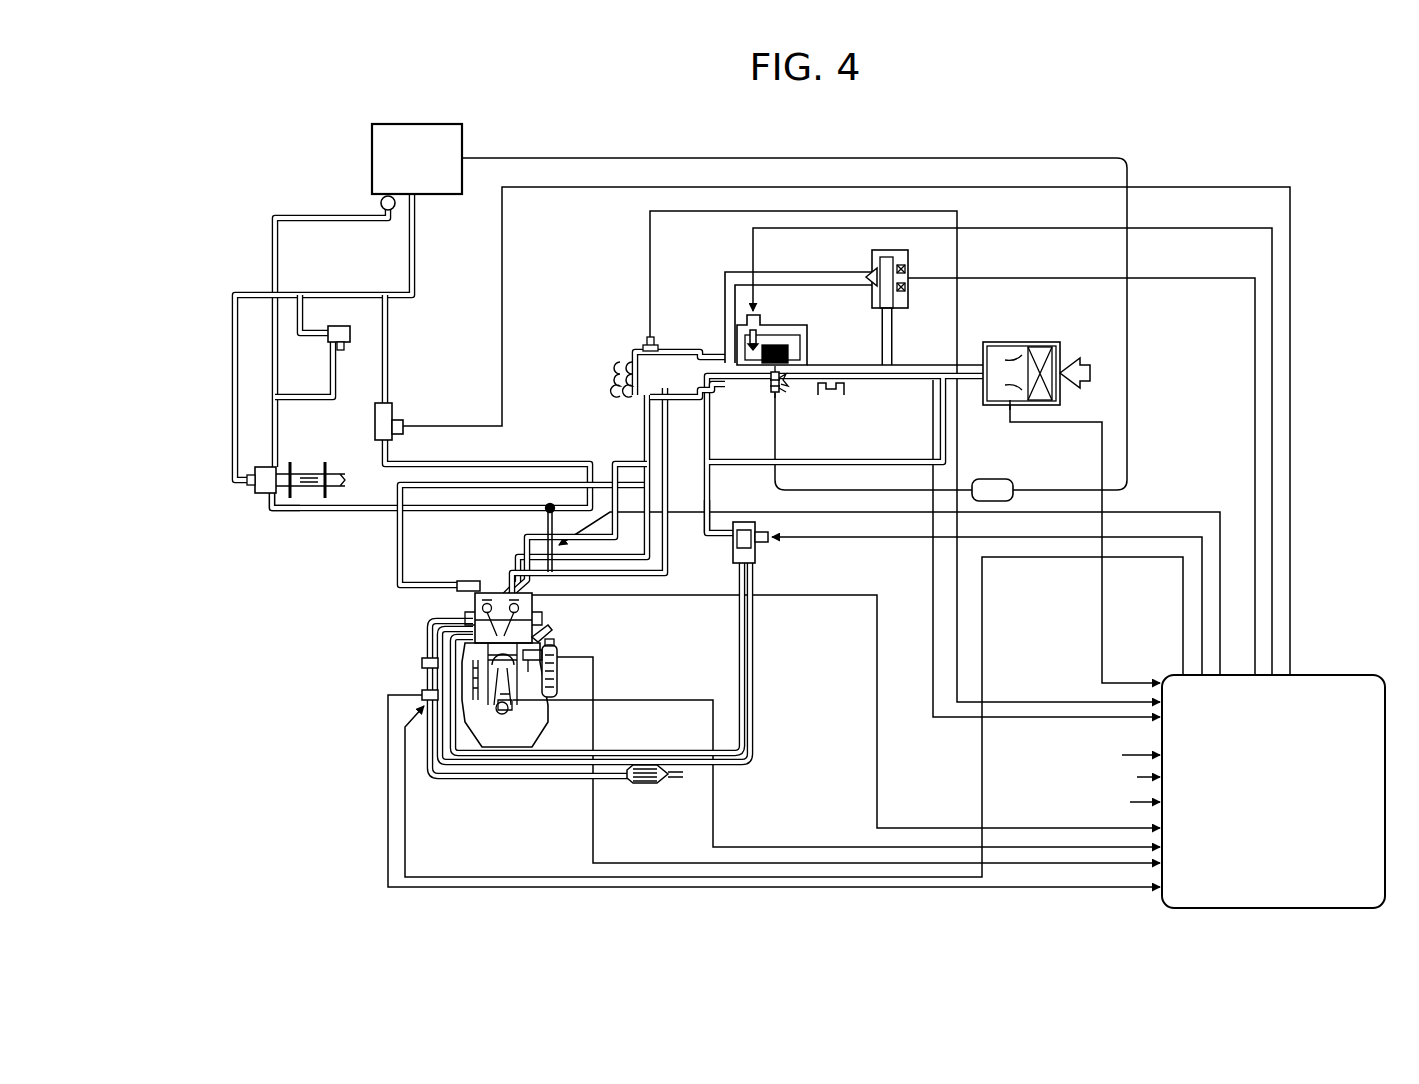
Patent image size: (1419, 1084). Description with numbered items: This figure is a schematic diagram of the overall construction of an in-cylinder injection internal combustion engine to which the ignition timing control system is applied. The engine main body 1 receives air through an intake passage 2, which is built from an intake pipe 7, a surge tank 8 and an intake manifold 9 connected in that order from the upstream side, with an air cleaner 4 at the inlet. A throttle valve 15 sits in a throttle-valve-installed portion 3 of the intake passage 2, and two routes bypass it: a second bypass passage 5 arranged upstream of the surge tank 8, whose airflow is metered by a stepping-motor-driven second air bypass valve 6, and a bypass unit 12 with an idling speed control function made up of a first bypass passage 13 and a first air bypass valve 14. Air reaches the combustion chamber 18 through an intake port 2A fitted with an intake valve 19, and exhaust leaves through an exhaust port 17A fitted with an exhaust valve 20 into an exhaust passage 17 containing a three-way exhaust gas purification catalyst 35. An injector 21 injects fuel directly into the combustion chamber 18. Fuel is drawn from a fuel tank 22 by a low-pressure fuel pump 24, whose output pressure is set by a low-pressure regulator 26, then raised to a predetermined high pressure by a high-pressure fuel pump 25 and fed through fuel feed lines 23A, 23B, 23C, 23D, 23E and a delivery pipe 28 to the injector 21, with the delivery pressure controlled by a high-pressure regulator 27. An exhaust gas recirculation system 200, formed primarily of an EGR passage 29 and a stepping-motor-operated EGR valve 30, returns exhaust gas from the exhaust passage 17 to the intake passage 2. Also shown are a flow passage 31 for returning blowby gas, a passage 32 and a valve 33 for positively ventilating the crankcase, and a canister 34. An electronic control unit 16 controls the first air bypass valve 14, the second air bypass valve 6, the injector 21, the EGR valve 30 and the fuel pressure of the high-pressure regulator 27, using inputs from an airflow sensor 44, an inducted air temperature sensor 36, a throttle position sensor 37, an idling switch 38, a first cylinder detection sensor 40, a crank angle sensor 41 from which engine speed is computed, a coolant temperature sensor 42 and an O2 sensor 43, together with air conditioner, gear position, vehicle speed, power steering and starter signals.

The engine main body 1 is at (536, 742).
The intake passage 2 is at (912, 360).
The intake port 2A is at (498, 595).
The throttle-valve-installed portion 3 is at (818, 395).
The air cleaner 4 is at (1015, 352).
The bypass passage (second bypass passage) 5 is at (731, 270).
The second air bypass valve (#2ABV) 6 is at (907, 268).
The intake pipe 7 is at (905, 382).
The surge tank 8 is at (640, 398).
The intake manifold 9 is at (668, 548).
The bypass unit 12 is at (762, 323).
The bypass passage (first bypass passage) 13 is at (800, 342).
The first air bypass valve (#1ABV) 14 is at (748, 338).
The throttle valve 15 is at (768, 388).
The electronic control unit (ECU) 16 is at (1326, 690).
The exhaust passage 17 is at (428, 648).
The exhaust port 17A is at (445, 623).
The combustion chamber 18 is at (424, 702).
The intake valve 19 is at (540, 614).
The exhaust valve 20 is at (475, 612).
The fuel injection valve (injector) 21 is at (550, 632).
The fuel tank 22 is at (372, 135).
The fuel feed line 23A is at (270, 245).
The fuel feed line 23B is at (280, 512).
The fuel feed line 23C is at (525, 462).
The fuel feed line 23D is at (232, 338).
The fuel feed line 23E is at (318, 398).
The low-pressure fuel pump 24 is at (380, 203).
The high-pressure fuel pump 25 is at (258, 487).
The low-pressure regulator 26 is at (345, 350).
The high-pressure regulator 27 is at (392, 410).
The delivery pipe 28 is at (546, 510).
The exhaust gas recirculation passage (EGR passage) 29 is at (753, 697).
The stepping-motor-operated valve (EGR valve) 30 is at (758, 548).
The flow passage 31 is at (758, 462).
The passage 32 is at (396, 530).
The valve 33 is at (460, 582).
The canister 34 is at (996, 478).
The exhaust gas purification catalyst 35 is at (645, 785).
The inducted air temperature sensor 36 is at (648, 340).
The throttle position sensor (TPS) 37 is at (785, 382).
The idling switch 38 is at (782, 390).
The first cylinder detection sensor 40 is at (487, 600).
The crank angle sensor 41 is at (515, 707).
The coolant temperature sensor 42 is at (560, 657).
The O2 sensor 43 is at (422, 698).
The airflow sensor 44 is at (1010, 405).
The exhaust gas recirculation system (EGR system) 200 is at (756, 658).